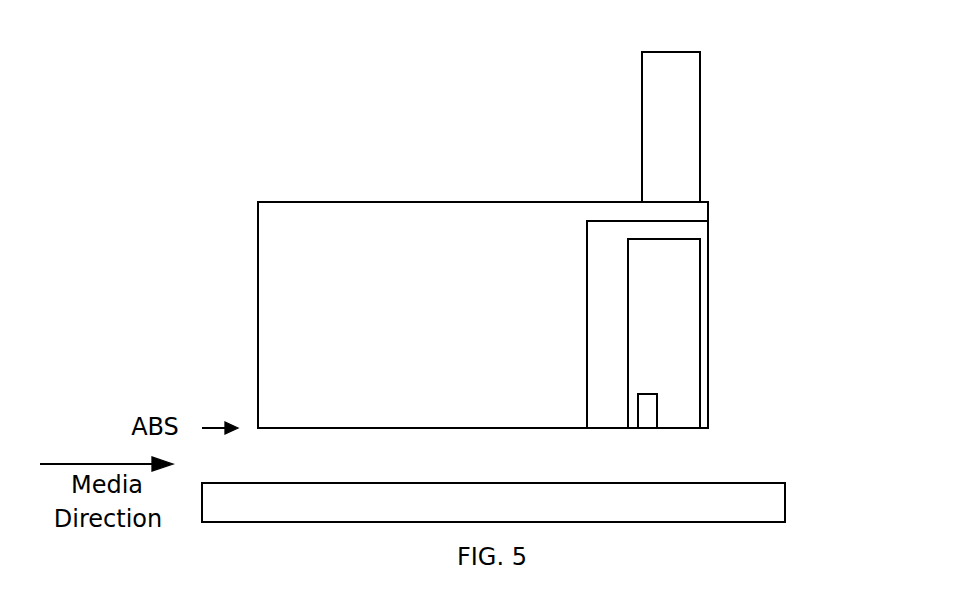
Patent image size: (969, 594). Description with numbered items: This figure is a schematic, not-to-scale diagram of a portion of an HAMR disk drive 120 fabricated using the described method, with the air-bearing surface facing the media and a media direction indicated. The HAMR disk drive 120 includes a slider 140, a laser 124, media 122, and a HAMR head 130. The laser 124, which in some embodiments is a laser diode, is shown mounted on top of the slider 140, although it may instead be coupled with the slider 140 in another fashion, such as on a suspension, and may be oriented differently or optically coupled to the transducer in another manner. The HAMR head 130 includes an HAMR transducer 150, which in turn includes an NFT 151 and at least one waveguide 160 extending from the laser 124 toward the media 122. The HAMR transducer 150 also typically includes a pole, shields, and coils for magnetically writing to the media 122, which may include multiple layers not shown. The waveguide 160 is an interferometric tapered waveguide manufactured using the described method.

The HAMR disk drive 120 is at (515, 45).
The media 122 is at (786, 500).
The laser 124 is at (641, 165).
The HAMR head 130 is at (772, 346).
The slider 140 is at (257, 239).
The HAMR transducer 150 is at (710, 294).
The NFT 151 is at (647, 430).
The waveguide 160 is at (668, 430).